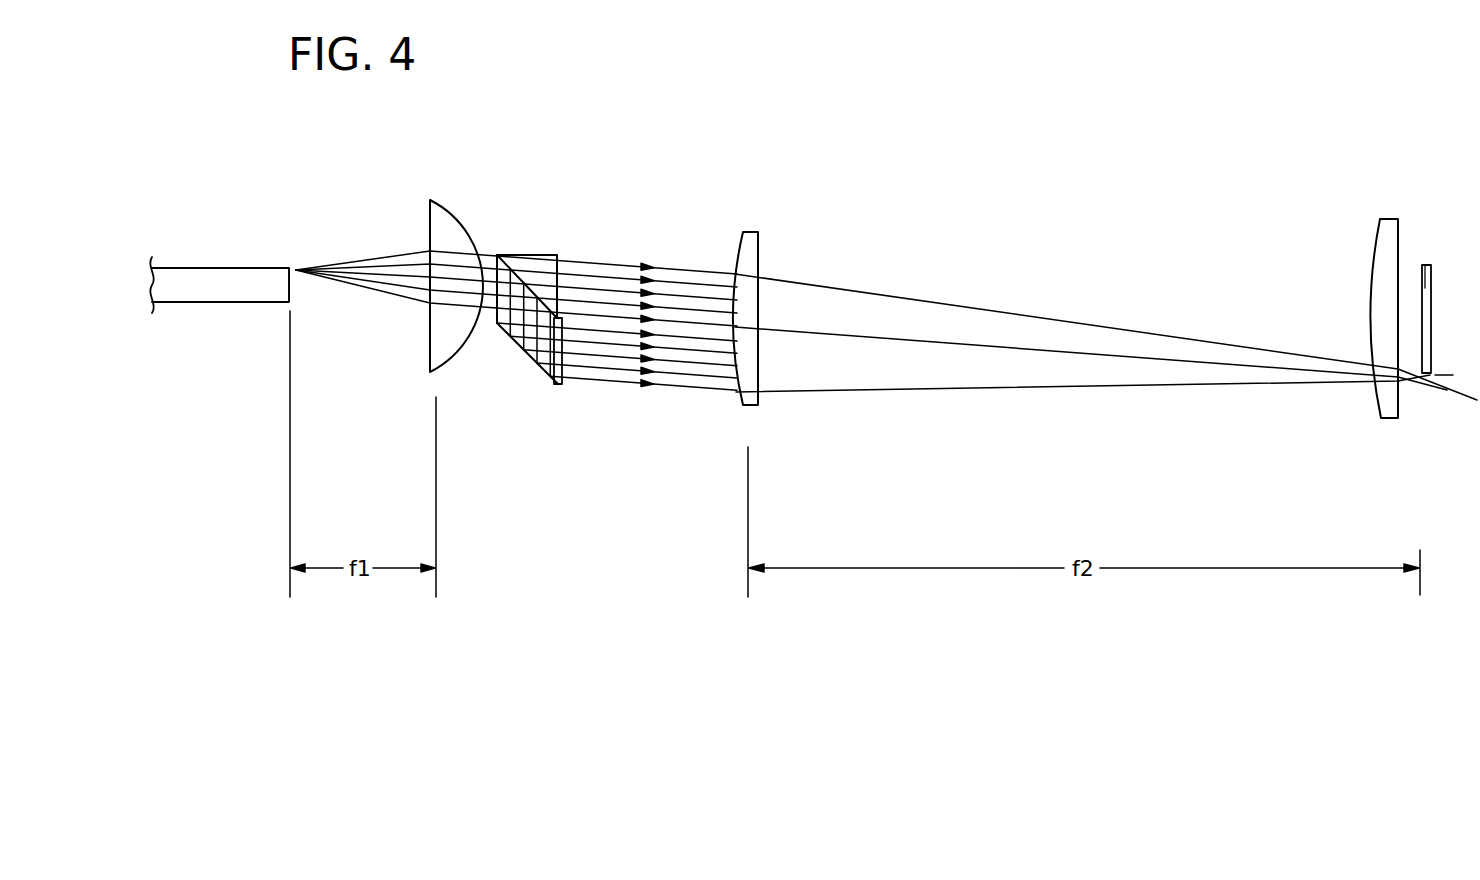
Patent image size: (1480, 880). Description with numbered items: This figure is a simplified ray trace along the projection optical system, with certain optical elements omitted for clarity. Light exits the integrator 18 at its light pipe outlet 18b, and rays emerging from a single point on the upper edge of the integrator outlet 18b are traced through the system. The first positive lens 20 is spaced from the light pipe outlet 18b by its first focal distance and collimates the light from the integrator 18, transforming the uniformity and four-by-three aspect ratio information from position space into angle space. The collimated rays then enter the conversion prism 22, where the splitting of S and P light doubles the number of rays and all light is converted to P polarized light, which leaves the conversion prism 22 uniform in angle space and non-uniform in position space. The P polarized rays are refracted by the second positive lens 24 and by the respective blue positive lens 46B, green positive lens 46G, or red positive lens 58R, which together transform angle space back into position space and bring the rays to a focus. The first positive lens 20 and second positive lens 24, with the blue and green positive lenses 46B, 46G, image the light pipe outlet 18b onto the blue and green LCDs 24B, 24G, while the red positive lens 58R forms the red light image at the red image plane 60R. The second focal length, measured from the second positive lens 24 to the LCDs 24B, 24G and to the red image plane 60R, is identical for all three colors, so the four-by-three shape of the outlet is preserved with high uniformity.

The integrator 18 is at (212, 265).
The light pipe outlet 18b is at (292, 291).
The first positive lens 20 is at (450, 213).
The conversion prism 22 is at (545, 254).
The second positive lens 24 is at (750, 232).
The blue LCD 24B is at (1387, 270).
The green LCD 24G is at (1387, 270).
The red image plane 60R is at (1436, 273).
The blue positive lens 46B is at (1338, 366).
The green positive lens 46G is at (1338, 366).
The red positive lens 58R is at (1388, 420).